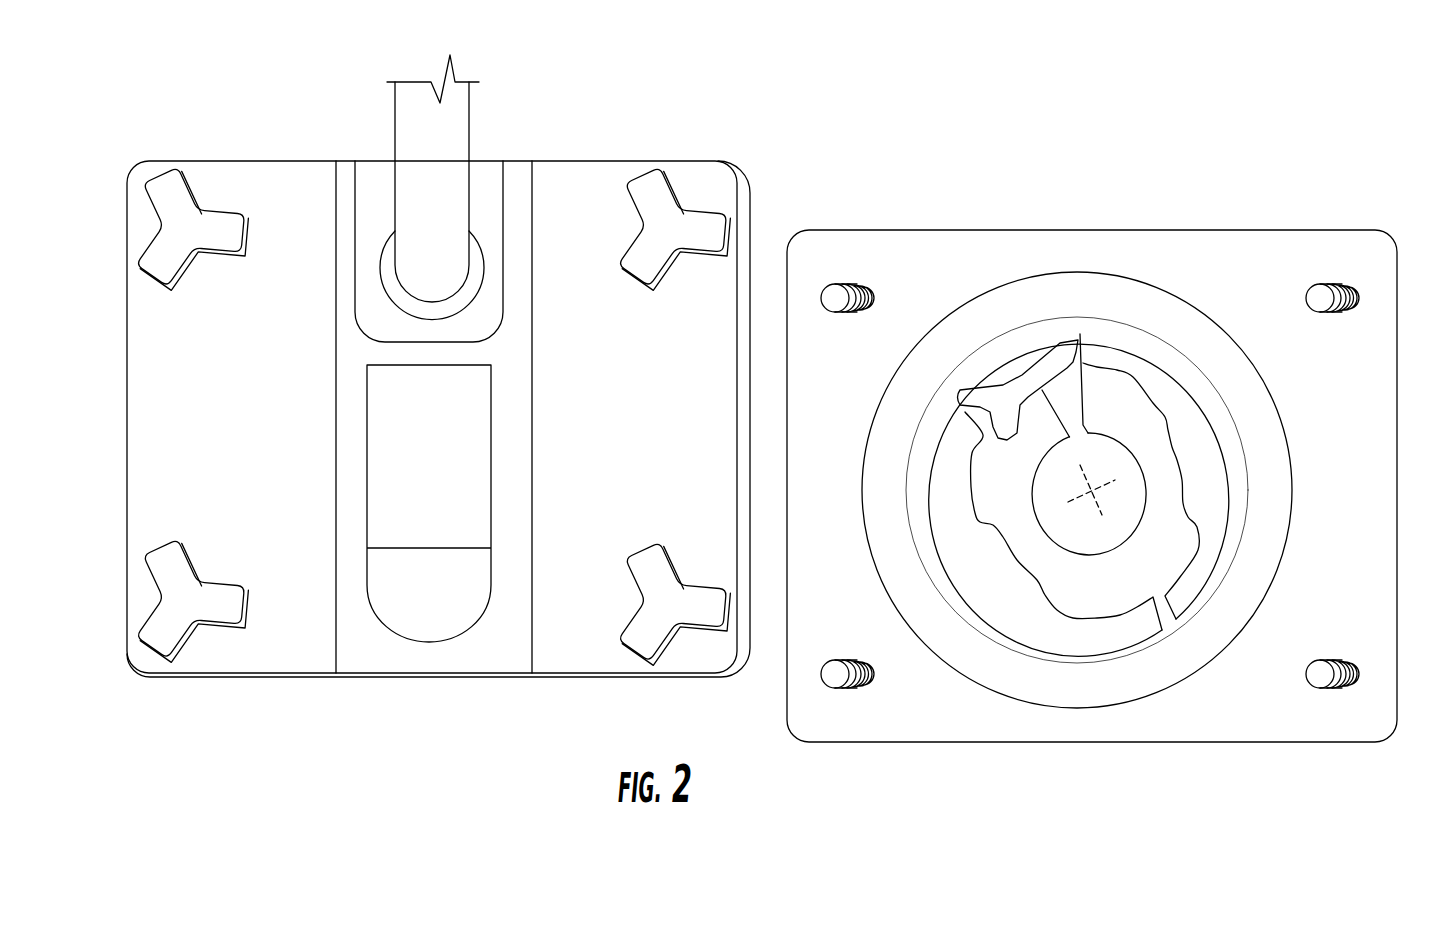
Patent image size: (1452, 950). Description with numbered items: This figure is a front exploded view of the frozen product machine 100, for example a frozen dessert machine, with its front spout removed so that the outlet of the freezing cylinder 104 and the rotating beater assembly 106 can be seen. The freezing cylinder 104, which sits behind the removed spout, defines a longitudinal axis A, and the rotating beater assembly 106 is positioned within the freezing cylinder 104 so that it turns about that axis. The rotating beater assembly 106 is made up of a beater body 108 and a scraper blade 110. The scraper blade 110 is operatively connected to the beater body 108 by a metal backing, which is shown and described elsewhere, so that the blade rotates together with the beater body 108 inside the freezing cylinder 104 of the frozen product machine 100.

The frozen product machine 100 is at (1392, 245).
The freezing cylinder 104 is at (1088, 316).
The rotating beater assembly 106 is at (1128, 405).
The beater body 108 is at (1083, 583).
The scraper blade 110 is at (1033, 373).
The longitudinal axis A is at (1089, 492).